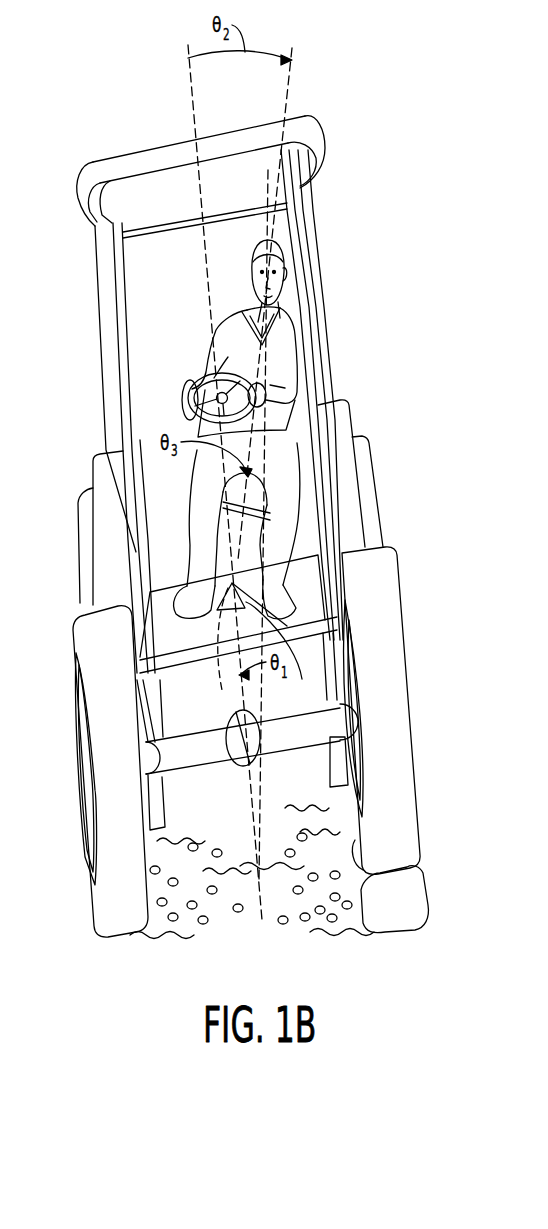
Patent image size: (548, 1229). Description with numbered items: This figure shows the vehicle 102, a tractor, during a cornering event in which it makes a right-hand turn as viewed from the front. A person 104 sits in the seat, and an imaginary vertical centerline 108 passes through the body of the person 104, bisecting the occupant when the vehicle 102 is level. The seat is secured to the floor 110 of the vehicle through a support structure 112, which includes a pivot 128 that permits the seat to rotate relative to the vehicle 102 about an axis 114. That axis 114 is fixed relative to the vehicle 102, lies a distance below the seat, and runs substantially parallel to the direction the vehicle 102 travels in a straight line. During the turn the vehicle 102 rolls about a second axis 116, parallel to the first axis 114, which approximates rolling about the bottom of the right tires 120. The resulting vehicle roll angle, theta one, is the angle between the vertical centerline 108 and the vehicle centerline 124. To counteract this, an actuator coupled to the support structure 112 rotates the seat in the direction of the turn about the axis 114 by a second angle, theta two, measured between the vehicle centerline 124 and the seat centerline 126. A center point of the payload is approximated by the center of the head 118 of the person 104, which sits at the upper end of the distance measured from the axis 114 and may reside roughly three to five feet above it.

The vehicle 102 is at (93, 162).
The person 104 is at (225, 418).
The vertical centerline 108 is at (268, 173).
The floor 110 is at (166, 632).
The support structure 112 is at (221, 540).
The axis 114 is at (227, 660).
The second axis 116 is at (259, 918).
The head 118 is at (262, 246).
The wheels 120 is at (377, 470).
The vehicle centerline 124 is at (188, 79).
The seat centerline 126 is at (292, 67).
The pivot 128 is at (281, 652).